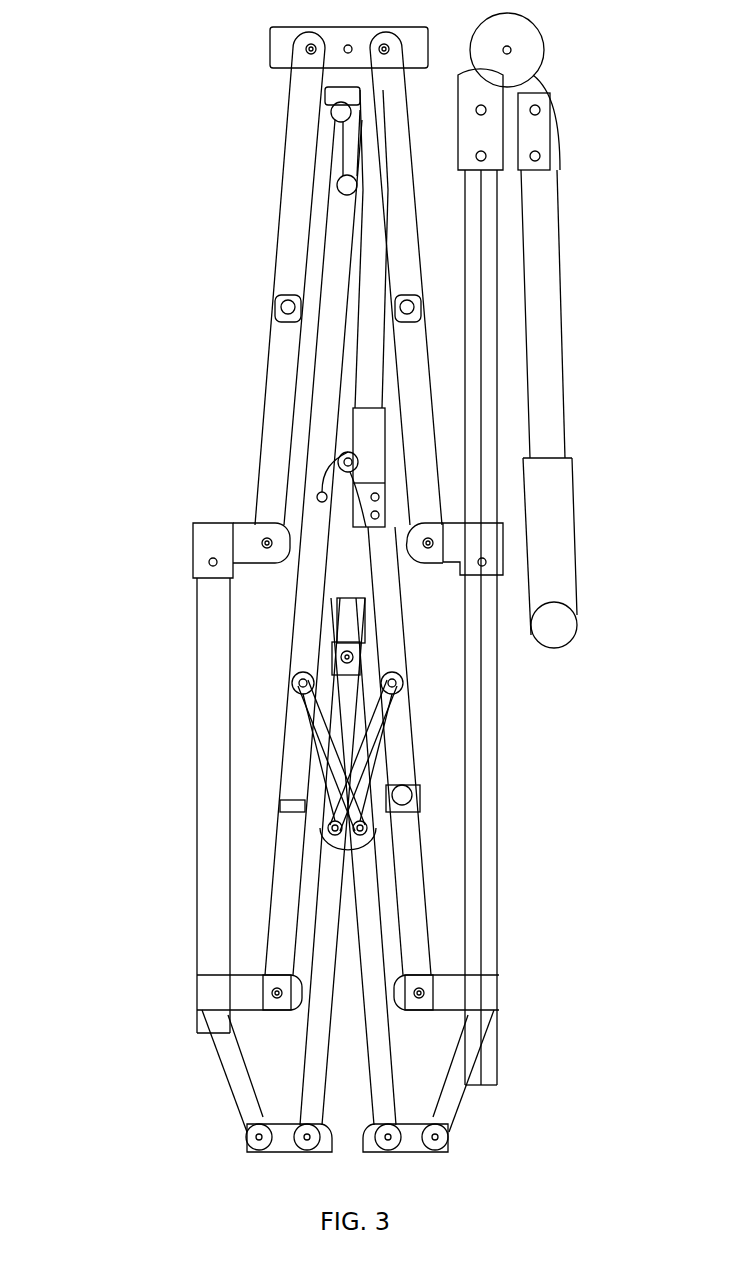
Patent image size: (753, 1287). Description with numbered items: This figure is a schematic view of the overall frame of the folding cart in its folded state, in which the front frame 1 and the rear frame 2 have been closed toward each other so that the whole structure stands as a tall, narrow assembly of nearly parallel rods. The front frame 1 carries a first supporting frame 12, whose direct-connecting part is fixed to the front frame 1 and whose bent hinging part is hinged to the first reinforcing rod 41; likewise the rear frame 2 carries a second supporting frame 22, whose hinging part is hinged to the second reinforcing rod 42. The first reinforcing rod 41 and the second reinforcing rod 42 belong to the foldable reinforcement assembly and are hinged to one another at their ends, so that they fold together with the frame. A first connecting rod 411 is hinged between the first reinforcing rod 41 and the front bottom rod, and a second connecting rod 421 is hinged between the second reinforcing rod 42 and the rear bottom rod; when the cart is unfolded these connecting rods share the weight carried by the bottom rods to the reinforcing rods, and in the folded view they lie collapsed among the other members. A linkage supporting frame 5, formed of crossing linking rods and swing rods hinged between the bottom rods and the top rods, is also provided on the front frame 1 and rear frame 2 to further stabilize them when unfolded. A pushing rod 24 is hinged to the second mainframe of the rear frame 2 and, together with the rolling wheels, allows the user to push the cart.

The front frame 1 is at (215, 848).
The rear frame 2 is at (488, 848).
The linkage supporting frame 5 is at (345, 185).
The first supporting frame 12 is at (235, 1102).
The second supporting frame 22 is at (460, 1102).
The pushing rod 24 is at (535, 380).
The first reinforcing rod 41 is at (310, 1015).
The second reinforcing rod 42 is at (370, 945).
The first connecting rod 411 is at (320, 748).
The second connecting rod 421 is at (375, 738).